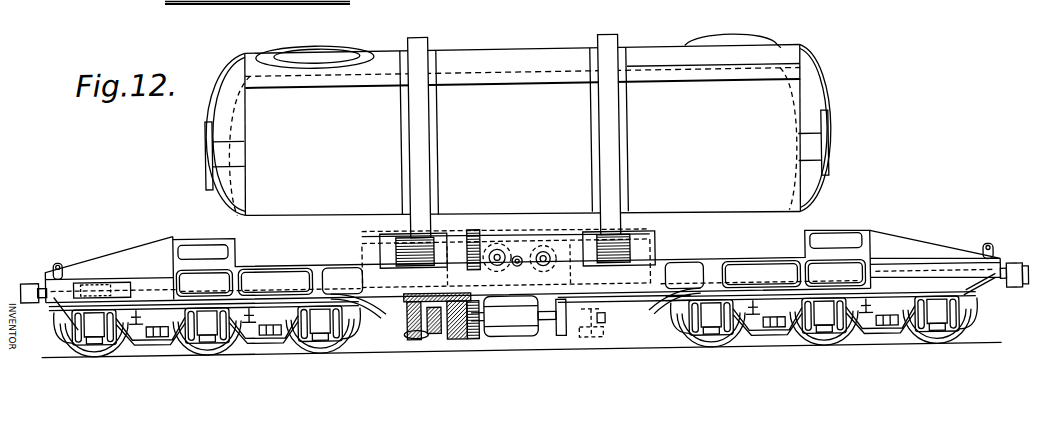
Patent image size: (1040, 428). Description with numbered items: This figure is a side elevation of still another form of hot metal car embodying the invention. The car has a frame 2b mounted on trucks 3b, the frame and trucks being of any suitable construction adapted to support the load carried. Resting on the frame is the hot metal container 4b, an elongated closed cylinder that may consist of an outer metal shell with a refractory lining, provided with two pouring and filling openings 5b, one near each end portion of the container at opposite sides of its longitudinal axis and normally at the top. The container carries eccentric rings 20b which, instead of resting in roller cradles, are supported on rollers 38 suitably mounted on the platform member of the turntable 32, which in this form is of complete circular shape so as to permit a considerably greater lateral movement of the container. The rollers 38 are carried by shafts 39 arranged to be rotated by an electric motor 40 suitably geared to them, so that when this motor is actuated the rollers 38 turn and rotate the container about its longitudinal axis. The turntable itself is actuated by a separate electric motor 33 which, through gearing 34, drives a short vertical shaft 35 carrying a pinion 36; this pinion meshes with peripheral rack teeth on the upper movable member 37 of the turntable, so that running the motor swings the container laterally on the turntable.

The frame 2b is at (145, 277).
The trucks 3b is at (833, 337).
The hot metal container 4b is at (518, 132).
The pouring and filling openings 5b is at (317, 47).
The eccentric rings 20b is at (643, 145).
The turntable 32 is at (530, 0).
The electric motor 33 is at (513, 337).
The gearing 34 is at (460, 339).
The short vertical shaft 35 is at (417, 320).
The pinion 36 is at (407, 300).
The upper movable member 37 is at (490, 0).
The rollers 38 is at (417, 240).
The shafts 39 is at (505, 248).
The electric motor 40 is at (545, 245).